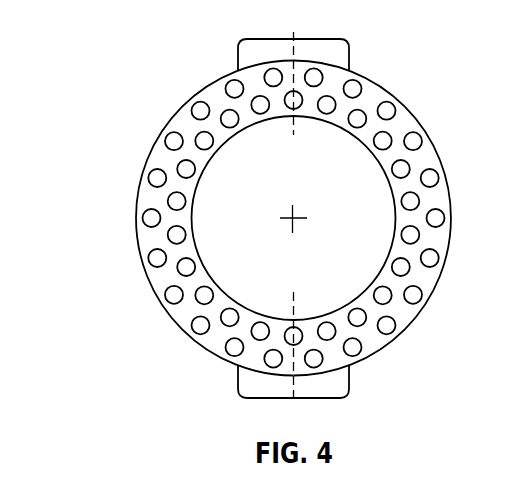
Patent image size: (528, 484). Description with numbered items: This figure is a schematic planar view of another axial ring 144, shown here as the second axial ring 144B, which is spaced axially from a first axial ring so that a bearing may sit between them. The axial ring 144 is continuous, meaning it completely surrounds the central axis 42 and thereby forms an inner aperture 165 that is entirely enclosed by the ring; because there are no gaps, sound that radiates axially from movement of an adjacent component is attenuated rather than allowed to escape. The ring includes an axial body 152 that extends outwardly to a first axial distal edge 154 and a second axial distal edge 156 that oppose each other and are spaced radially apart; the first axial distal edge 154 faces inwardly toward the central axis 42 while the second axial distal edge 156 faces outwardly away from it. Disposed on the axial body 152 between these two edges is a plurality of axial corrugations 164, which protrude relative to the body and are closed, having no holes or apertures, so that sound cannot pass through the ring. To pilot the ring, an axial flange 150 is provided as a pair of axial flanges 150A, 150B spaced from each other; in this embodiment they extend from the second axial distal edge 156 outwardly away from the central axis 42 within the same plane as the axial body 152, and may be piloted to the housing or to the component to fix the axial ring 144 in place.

The central axis 42 is at (295, 215).
The axial ring 144 is at (153, 140).
The second axial ring 144B is at (152, 147).
The axial flange 150 is at (360, 219).
The axial flange 150A is at (339, 42).
The axial flange 150B is at (339, 393).
The axial body 152 is at (412, 318).
The first axial distal edge 154 is at (190, 232).
The second axial distal edge 156 is at (138, 224).
The axial corrugations 164 is at (430, 261).
The inner aperture 165 is at (250, 292).